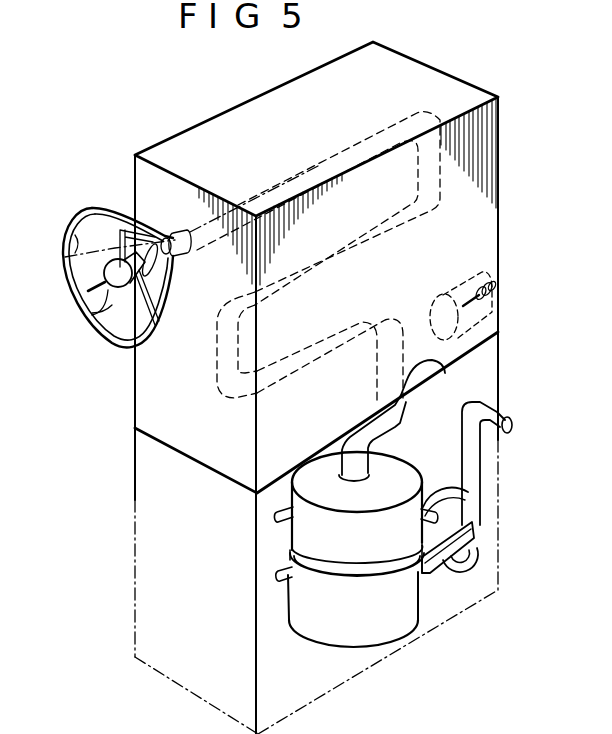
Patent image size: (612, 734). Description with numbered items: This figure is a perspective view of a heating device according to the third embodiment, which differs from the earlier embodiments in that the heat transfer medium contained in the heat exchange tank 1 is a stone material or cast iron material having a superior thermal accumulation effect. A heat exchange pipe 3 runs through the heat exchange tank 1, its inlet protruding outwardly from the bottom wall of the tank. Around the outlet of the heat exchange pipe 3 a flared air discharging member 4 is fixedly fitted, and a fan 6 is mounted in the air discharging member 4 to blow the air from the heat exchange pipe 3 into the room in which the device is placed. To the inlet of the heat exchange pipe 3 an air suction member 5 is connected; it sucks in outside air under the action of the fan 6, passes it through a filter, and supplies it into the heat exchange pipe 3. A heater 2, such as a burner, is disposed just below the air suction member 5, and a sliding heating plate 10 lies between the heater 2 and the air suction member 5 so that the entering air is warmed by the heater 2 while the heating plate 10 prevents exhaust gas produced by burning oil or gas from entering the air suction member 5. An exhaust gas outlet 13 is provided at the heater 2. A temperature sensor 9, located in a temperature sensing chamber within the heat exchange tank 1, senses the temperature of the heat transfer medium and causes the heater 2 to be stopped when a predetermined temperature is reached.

The heat exchange tank 1 is at (398, 75).
The air discharging member 4 is at (67, 260).
The fan 6 is at (92, 315).
The temperature sensor 9 is at (498, 285).
The heat exchange pipe 3 is at (445, 373).
The heater 2 is at (418, 637).
The air suction member 5 is at (483, 493).
The exhaust gas outlet 13 is at (481, 513).
The sliding heating plate 10 is at (481, 552).